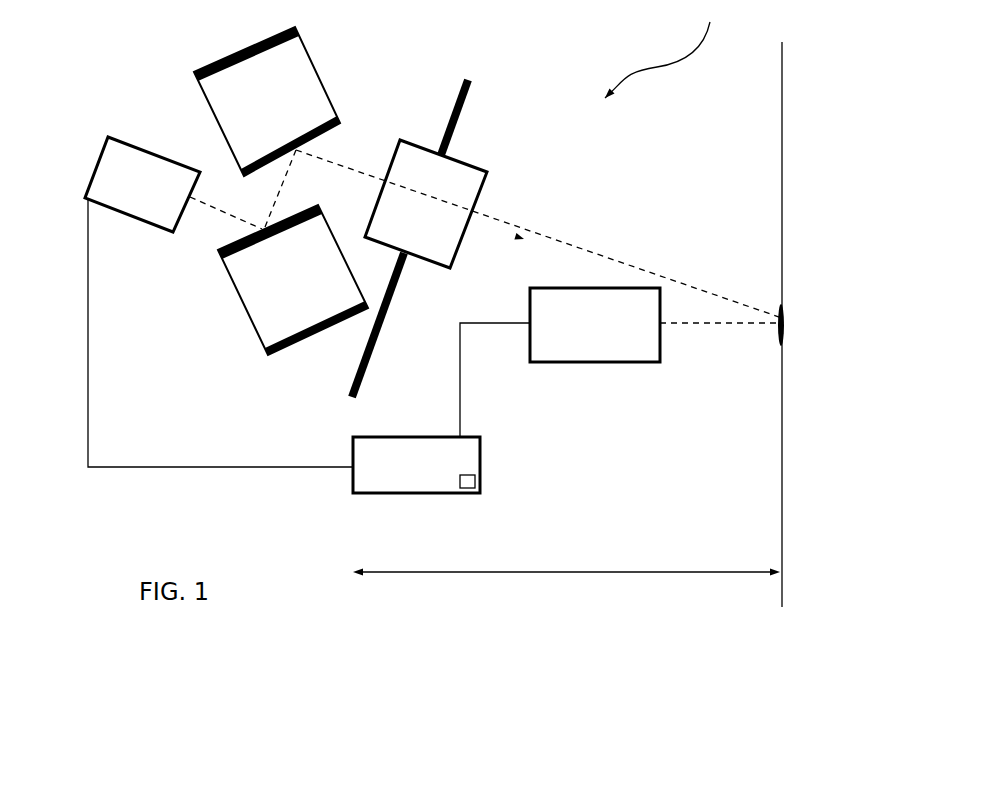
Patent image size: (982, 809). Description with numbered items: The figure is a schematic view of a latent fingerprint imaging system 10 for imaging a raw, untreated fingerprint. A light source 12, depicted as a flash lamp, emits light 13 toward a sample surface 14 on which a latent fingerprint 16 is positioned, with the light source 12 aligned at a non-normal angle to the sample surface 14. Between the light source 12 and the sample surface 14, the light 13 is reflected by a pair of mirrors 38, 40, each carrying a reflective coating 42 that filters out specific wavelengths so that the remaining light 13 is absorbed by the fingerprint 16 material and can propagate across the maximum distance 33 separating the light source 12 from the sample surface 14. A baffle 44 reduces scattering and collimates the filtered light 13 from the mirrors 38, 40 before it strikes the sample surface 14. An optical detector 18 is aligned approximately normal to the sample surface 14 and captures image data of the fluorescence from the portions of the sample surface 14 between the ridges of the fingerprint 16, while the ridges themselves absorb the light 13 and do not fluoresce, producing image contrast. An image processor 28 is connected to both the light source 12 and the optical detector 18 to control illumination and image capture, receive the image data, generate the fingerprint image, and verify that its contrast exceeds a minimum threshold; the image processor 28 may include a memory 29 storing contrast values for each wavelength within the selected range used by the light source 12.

The latent fingerprint imaging system 10 is at (667, 49).
The light source 12 is at (125, 214).
The light 13 is at (600, 262).
The sample surface 14 is at (782, 147).
The latent fingerprint 16 is at (784, 316).
The optical detector 18 is at (595, 362).
The image processor 28 is at (415, 495).
The memory 29 is at (476, 481).
The maximum distance 33 is at (583, 573).
The mirror 38 is at (237, 230).
The mirror 40 is at (327, 138).
The reflective coating 42 is at (243, 172).
The baffle 44 is at (350, 378).